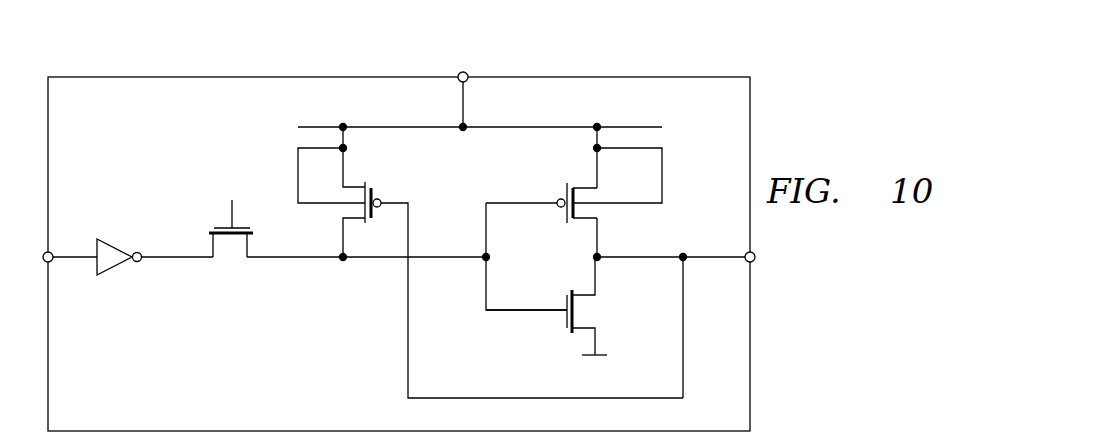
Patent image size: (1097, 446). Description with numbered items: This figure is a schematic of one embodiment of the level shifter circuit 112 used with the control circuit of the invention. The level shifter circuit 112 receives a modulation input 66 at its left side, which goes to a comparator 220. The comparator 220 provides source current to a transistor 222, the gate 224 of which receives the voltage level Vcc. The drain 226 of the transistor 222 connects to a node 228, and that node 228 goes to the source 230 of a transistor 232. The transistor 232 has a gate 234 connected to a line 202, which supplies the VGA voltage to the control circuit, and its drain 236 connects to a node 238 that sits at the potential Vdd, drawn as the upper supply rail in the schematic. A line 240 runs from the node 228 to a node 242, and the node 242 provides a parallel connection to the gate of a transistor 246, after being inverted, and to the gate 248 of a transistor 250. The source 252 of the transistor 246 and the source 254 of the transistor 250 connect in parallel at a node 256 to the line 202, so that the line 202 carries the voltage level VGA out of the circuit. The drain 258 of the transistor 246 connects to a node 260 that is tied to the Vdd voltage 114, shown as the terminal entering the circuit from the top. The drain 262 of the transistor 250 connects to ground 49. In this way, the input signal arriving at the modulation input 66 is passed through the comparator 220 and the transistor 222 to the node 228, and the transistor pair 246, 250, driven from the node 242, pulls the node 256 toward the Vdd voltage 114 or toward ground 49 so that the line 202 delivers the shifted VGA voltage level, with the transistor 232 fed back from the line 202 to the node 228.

The level shifter circuit 112 is at (720, 48).
The Vdd voltage 114 is at (463, 96).
The modulation input 66 is at (80, 255).
The comparator 220 is at (110, 240).
The transistor 222 is at (207, 252).
The gate 224 is at (230, 212).
The drain 226 is at (286, 260).
The node 228 is at (343, 260).
The source 230 is at (343, 236).
The transistor 232 is at (405, 187).
The gate 234 is at (410, 213).
The drain 236 is at (345, 150).
The node 238 is at (343, 126).
The line 240 is at (452, 262).
The node 242 is at (485, 255).
The transistor 246 is at (556, 175).
The gate 248 is at (508, 312).
The transistor 250 is at (558, 342).
The source 252 is at (598, 236).
The source 254 is at (595, 280).
The node 256 is at (685, 260).
The drain 258 is at (598, 155).
The node 260 is at (600, 124).
The drain 262 is at (594, 320).
The ground 49 is at (601, 356).
The line 202 is at (716, 256).